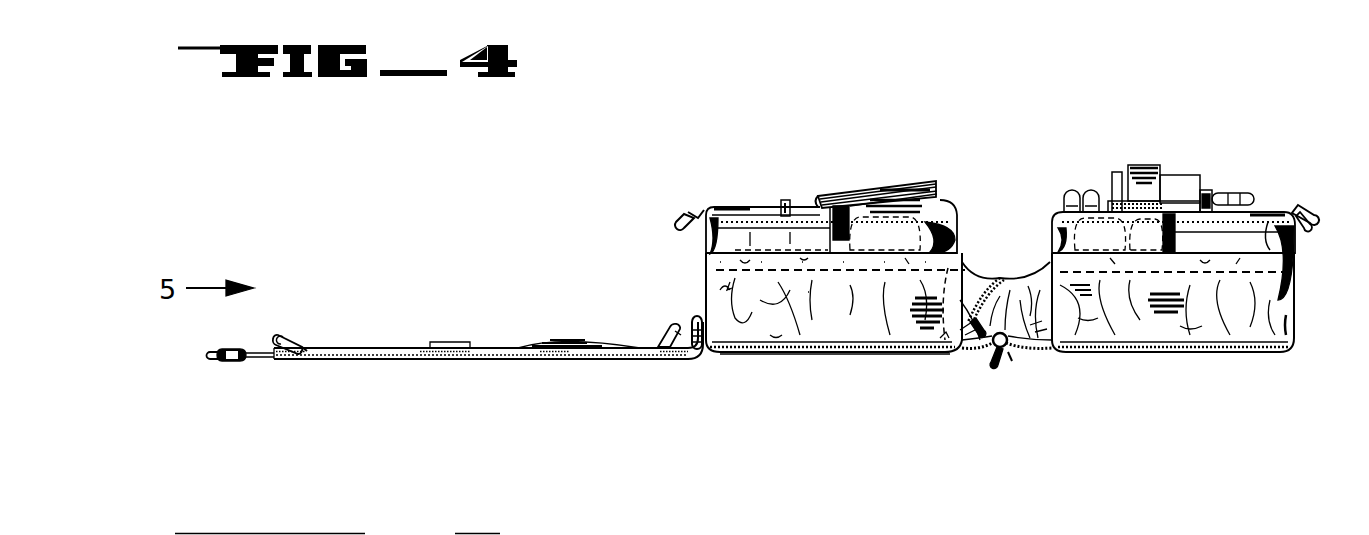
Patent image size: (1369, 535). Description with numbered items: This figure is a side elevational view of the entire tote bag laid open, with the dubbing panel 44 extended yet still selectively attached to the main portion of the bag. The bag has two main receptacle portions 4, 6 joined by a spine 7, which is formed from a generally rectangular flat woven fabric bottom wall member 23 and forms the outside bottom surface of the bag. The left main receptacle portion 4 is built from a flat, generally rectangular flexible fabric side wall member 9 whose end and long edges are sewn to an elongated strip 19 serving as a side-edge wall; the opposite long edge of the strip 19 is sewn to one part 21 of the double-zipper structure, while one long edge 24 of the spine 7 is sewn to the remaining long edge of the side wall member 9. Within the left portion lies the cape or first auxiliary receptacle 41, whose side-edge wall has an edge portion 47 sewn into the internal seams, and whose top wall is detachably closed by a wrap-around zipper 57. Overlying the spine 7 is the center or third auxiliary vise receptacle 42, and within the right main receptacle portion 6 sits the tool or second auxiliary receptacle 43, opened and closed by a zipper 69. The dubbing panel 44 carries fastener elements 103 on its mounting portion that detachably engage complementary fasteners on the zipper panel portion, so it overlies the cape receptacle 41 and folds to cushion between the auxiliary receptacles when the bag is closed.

The main receptacle portion 4 is at (748, 185).
The main receptacle portion 6 is at (1208, 176).
The spine 7 is at (1007, 364).
The side wall member 9 is at (782, 272).
The elongated strip 19 is at (842, 318).
The zipper part 21 is at (864, 356).
The bottom wall member 23 is at (940, 352).
The long edge 24 is at (960, 262).
The first auxiliary receptacle 41 is at (802, 198).
The third auxiliary vise receptacle 42 is at (1021, 276).
The second auxiliary receptacle 43 is at (1272, 196).
The dubbing panel 44 is at (498, 336).
The edge portion 47 is at (952, 265).
The zipper 57 is at (720, 208).
The zipper 69 is at (1275, 240).
The fastener elements 103 is at (697, 320).